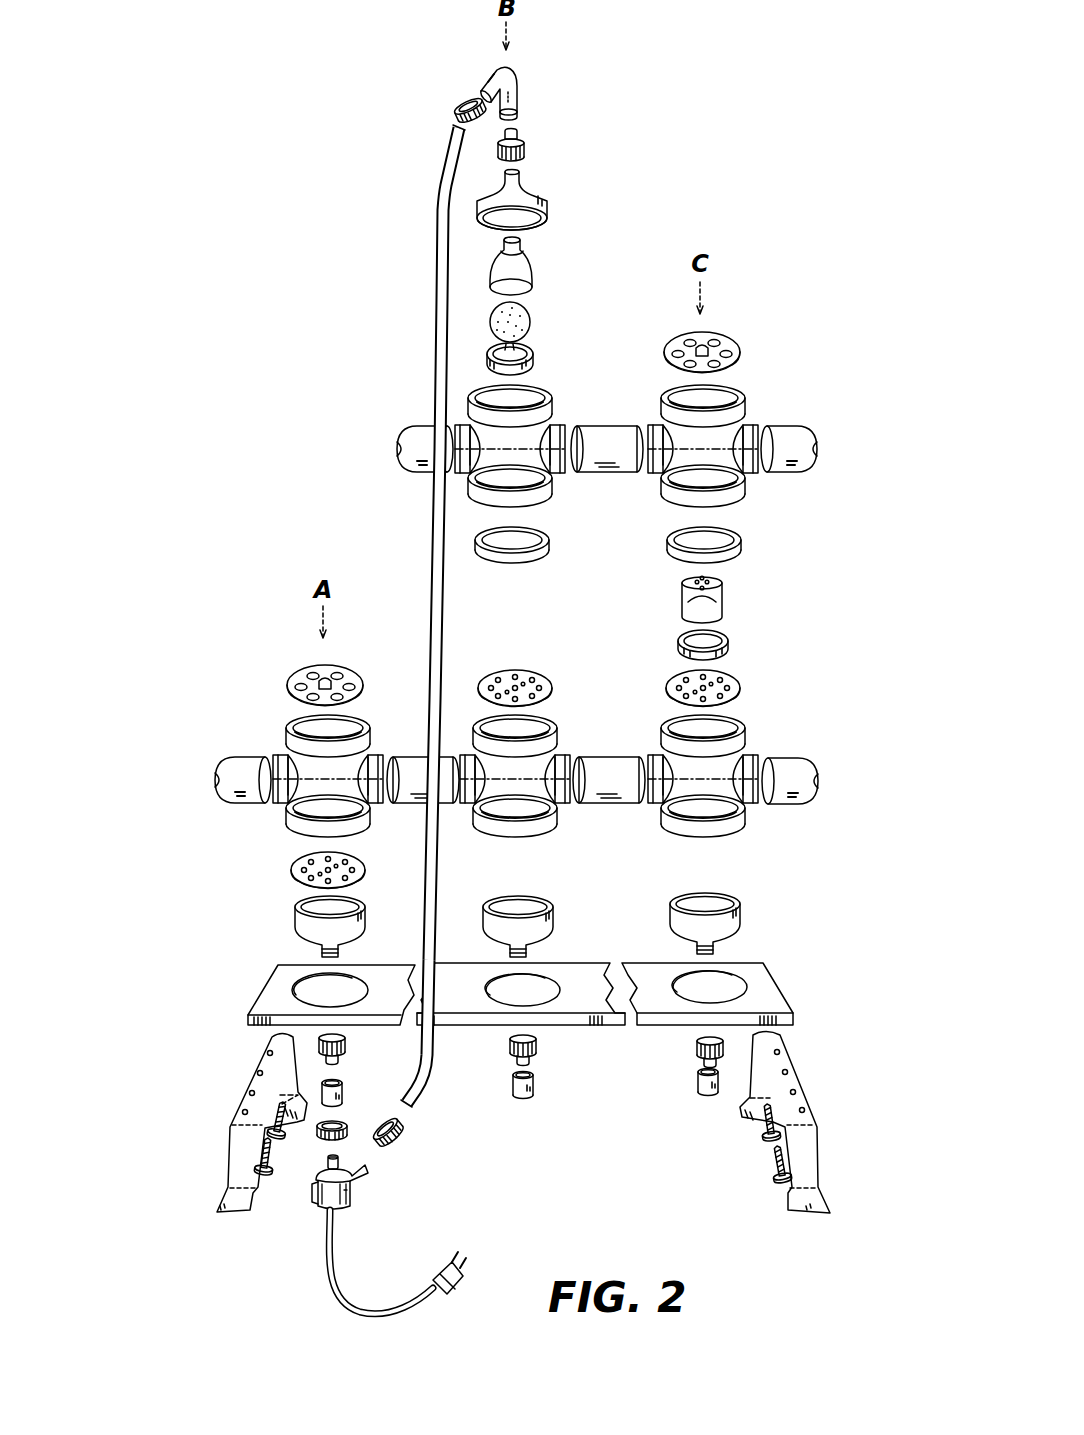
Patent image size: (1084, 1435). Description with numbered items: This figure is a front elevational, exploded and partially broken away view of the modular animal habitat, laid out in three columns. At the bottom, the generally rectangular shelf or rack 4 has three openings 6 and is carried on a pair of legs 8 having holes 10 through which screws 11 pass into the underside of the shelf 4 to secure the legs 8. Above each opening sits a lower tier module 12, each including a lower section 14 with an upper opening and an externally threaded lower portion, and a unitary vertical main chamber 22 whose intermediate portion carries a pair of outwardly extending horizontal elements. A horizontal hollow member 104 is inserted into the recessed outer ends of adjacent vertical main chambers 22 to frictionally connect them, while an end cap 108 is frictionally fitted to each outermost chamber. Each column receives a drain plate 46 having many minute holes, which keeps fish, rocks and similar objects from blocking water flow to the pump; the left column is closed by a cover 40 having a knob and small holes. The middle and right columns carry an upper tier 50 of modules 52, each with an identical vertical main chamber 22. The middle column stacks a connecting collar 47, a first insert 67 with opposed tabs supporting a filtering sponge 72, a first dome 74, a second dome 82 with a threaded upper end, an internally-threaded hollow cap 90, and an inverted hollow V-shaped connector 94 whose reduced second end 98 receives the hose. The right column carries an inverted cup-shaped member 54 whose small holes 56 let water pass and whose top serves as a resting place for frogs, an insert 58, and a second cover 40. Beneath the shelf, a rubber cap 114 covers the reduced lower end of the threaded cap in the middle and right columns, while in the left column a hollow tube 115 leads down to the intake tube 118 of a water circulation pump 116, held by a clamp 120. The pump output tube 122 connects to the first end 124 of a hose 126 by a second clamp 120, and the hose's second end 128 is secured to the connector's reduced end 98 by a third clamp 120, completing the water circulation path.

The shelf or rack 4 is at (594, 1030).
The openings 6 is at (323, 980).
The legs 8 is at (226, 1140).
The holes 10 is at (250, 1093).
The screws 11 is at (269, 1176).
The lower tier module 12 is at (214, 845).
The lower section 14 is at (294, 926).
The vertical main chamber 22 is at (276, 750).
The cover 40 is at (289, 678).
The drain plate 46 is at (662, 690).
The connecting collar 47 is at (666, 545).
The upper tier 50 is at (832, 450).
The modules 52 is at (655, 415).
The inverted cup-shaped member 54 is at (683, 603).
The small holes 56 is at (712, 590).
The insert 58 is at (680, 648).
The first insert 67 is at (536, 357).
The filtering sponge 72 is at (531, 322).
The first dome 74 is at (535, 274).
The second dome 82 is at (550, 207).
The internally-threaded hollow cap 90 is at (527, 143).
The inverted hollow V-shaped connector 94 is at (520, 80).
The reduced second end 98 is at (483, 88).
The horizontal hollow member 104 is at (410, 804).
The end cap 108 is at (396, 450).
The rubber cap 114 is at (533, 1093).
The hollow tube 115 is at (344, 1088).
The water circulation pump 116 is at (345, 1208).
The intake tube 118 is at (349, 1188).
The clamp 120 is at (458, 100).
The output tube 122 is at (350, 1172).
The first end 124 is at (421, 1099).
The hose 126 is at (430, 520).
The second end 128 is at (446, 148).